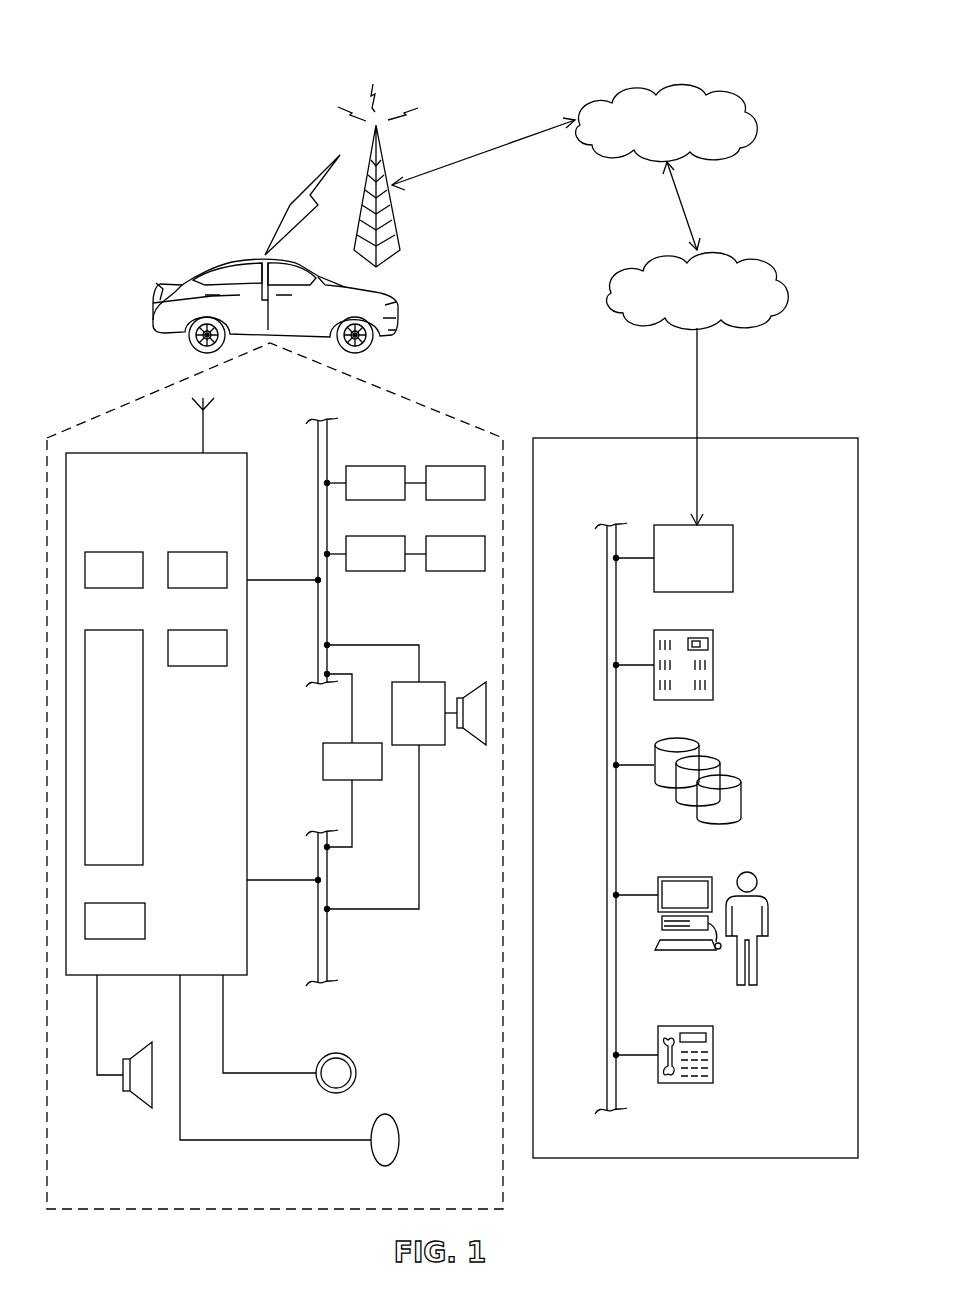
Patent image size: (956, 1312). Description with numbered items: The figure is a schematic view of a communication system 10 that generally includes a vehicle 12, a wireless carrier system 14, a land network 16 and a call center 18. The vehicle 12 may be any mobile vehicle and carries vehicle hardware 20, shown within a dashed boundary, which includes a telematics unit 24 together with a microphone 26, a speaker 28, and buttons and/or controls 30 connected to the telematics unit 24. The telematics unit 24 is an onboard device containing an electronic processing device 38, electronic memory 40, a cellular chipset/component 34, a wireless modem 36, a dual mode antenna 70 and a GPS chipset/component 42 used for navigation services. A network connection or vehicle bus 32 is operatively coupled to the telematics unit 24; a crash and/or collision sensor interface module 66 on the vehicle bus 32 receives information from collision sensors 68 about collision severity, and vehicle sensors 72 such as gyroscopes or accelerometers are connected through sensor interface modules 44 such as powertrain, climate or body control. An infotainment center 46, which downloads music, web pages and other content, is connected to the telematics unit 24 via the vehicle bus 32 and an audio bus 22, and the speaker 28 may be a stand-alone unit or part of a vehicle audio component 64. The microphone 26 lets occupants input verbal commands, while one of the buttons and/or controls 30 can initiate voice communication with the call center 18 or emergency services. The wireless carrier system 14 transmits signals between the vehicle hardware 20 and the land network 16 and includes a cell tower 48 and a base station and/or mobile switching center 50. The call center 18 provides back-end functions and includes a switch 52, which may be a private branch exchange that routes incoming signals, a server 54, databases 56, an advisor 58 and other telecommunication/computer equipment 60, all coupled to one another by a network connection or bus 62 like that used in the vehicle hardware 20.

The communication system 10 is at (112, 22).
The vehicle 12 is at (240, 262).
The wireless carrier system 14 is at (714, 44).
The land network 16 is at (732, 256).
The call center 18 is at (580, 438).
The vehicle hardware 20 is at (166, 388).
The audio bus 22 is at (318, 953).
The telematics unit 24 is at (247, 794).
The microphone 26 is at (382, 1114).
The speaker 28 is at (138, 1100).
The buttons and/or controls 30 is at (332, 1053).
The vehicle bus 32 is at (327, 620).
The cellular chipset/component 34 is at (121, 552).
The wireless modem 36 is at (203, 552).
The electronic processing device 38 is at (121, 630).
The electronic memory 40 is at (121, 903).
The GPS chipset/component 42 is at (203, 630).
The sensor interface modules 44 is at (384, 536).
The infotainment center 46 is at (338, 743).
The cell tower 48 is at (385, 148).
The base station and/or mobile switching center 50 is at (700, 88).
The switch 52 is at (714, 525).
The server 54 is at (700, 630).
The database 56 is at (728, 775).
The advisor 58 is at (744, 874).
The telecommunication/computer equipment 60 is at (686, 1026).
The network connection or bus 62 is at (600, 940).
The vehicle audio component 64 is at (430, 682).
The crash and/or collision sensor interface module 66 is at (384, 466).
The collision sensors 68 is at (460, 466).
The dual mode antenna 70 is at (203, 436).
The vehicle sensors 72 is at (460, 536).